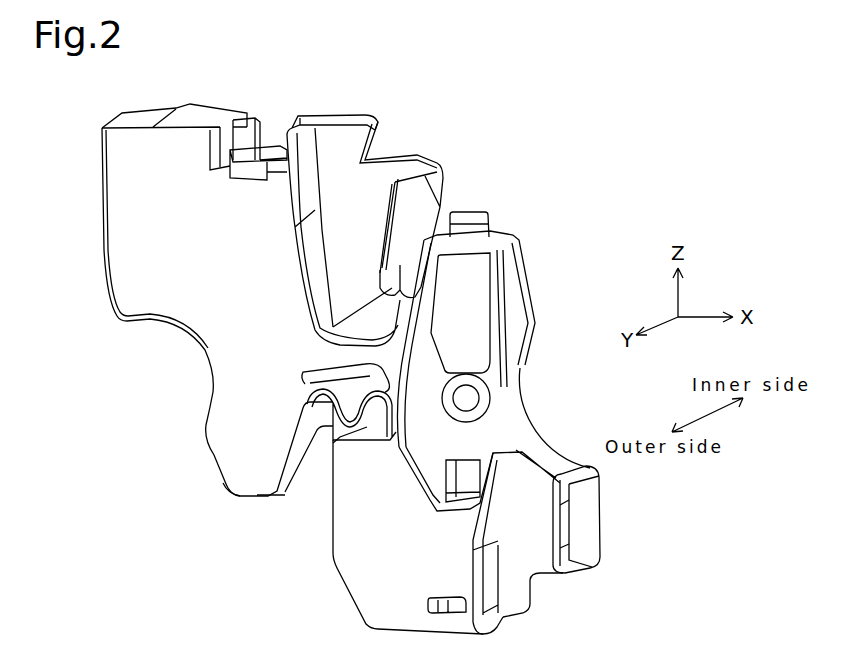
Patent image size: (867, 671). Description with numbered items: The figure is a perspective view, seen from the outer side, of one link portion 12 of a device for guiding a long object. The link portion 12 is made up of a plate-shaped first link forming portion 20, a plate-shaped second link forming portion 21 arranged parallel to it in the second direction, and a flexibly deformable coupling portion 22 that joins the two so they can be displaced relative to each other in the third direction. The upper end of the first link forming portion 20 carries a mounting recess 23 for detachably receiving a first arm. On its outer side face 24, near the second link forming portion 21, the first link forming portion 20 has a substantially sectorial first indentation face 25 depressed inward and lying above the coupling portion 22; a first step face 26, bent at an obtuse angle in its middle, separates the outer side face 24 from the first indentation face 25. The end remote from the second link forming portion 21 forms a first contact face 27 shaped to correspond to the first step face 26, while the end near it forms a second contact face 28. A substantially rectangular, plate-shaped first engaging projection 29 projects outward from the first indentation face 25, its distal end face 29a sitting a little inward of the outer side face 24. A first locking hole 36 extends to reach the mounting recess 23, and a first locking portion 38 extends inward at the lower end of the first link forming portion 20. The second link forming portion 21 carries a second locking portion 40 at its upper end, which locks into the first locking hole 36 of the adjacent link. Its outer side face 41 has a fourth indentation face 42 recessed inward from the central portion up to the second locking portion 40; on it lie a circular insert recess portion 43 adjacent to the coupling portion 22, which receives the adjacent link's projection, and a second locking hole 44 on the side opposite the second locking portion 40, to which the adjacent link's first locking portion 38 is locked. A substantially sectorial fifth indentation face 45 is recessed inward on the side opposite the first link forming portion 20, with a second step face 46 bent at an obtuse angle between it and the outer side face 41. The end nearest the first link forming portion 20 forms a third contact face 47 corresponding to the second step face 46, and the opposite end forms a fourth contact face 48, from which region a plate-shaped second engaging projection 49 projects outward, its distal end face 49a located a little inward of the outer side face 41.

The link portion 12 is at (607, 181).
The first link forming portion 20 is at (147, 113).
The second link forming portion 21 is at (530, 285).
The coupling portion 22 is at (325, 430).
The mounting recess 23 is at (255, 137).
The outer side face 24 is at (118, 183).
The first indentation face 25 is at (394, 165).
The first step face 26 is at (302, 207).
The first contact face 27 is at (102, 150).
The second contact face 28 is at (430, 203).
The first engaging projection 29 is at (385, 274).
The distal end face 29a is at (388, 228).
The first locking hole 36 is at (262, 155).
The first locking portion 38 is at (283, 499).
The second locking portion 40 is at (480, 217).
The outer side face 41 is at (362, 588).
The fourth indentation face 42 is at (485, 437).
The insert recess portion 43 is at (470, 398).
The second locking hole 44 is at (450, 500).
The fifth indentation face 45 is at (520, 573).
The second step face 46 is at (485, 575).
The third contact face 47 is at (331, 555).
The fourth contact face 48 is at (597, 533).
The second engaging projection 49 is at (548, 525).
The distal end face 49a is at (562, 510).